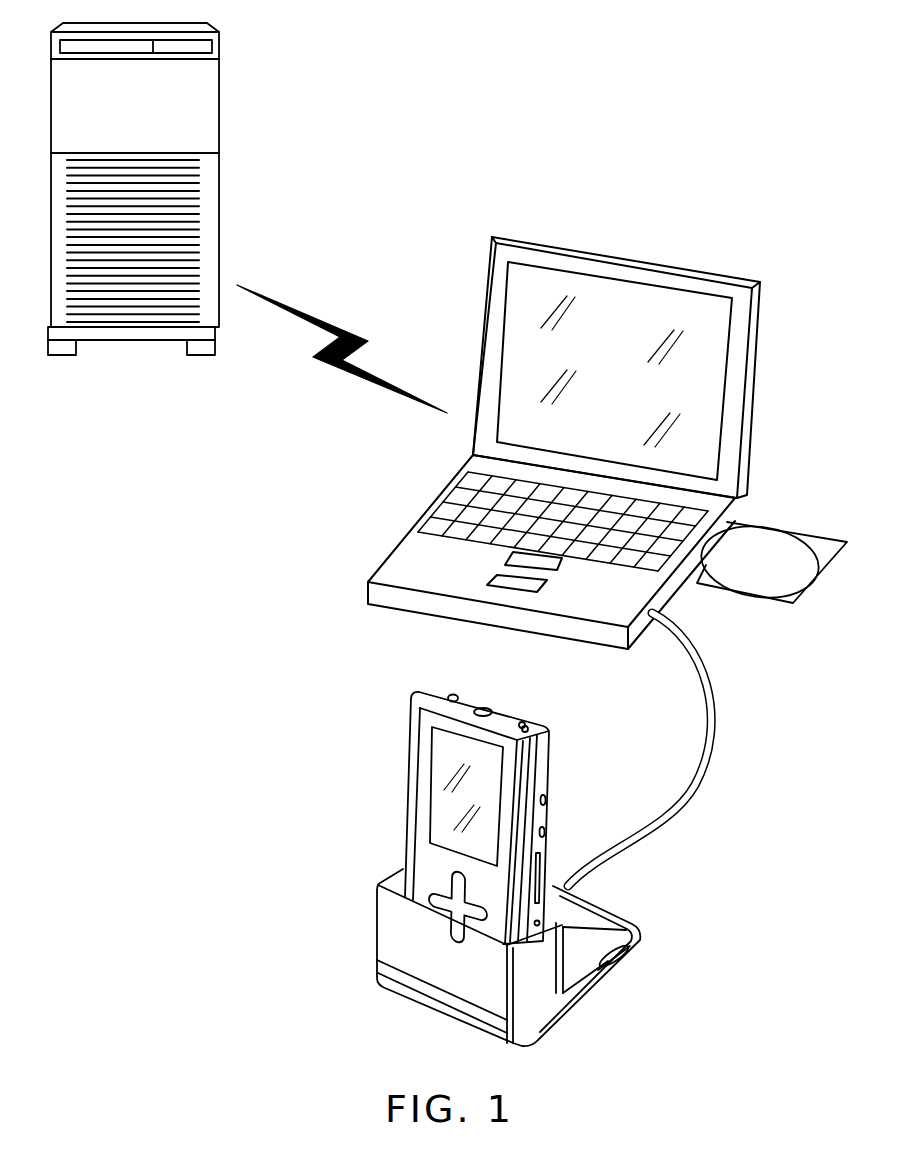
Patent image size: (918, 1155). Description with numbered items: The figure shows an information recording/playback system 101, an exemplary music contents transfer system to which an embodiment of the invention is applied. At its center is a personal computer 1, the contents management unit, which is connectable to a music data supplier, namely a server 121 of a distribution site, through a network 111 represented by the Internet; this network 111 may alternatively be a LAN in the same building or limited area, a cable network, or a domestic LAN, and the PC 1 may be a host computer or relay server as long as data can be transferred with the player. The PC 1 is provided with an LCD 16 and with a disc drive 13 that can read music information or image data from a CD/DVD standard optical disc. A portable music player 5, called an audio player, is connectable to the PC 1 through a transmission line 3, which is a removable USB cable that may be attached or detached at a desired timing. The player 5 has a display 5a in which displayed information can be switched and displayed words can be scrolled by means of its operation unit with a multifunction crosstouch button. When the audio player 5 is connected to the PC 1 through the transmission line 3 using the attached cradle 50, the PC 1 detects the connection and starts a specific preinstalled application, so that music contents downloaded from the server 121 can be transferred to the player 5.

The personal computer 1 is at (607, 394).
The transmission line 3 is at (706, 755).
The portable music player 5 is at (421, 821).
The display 5a is at (438, 805).
The disc drive 13 is at (768, 545).
The LCD 16 is at (705, 395).
The cradle 50 is at (598, 900).
The information recording/playback system 101 is at (250, 686).
The network 111 is at (322, 322).
The server 121 is at (220, 120).